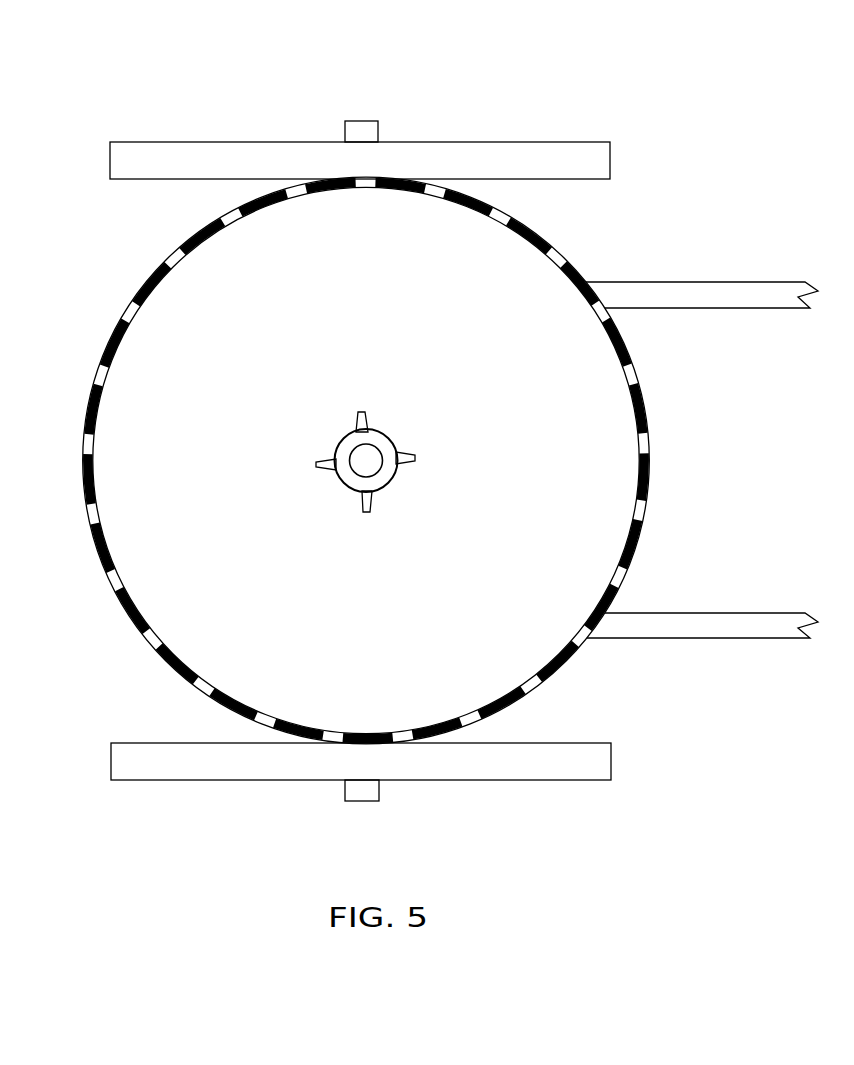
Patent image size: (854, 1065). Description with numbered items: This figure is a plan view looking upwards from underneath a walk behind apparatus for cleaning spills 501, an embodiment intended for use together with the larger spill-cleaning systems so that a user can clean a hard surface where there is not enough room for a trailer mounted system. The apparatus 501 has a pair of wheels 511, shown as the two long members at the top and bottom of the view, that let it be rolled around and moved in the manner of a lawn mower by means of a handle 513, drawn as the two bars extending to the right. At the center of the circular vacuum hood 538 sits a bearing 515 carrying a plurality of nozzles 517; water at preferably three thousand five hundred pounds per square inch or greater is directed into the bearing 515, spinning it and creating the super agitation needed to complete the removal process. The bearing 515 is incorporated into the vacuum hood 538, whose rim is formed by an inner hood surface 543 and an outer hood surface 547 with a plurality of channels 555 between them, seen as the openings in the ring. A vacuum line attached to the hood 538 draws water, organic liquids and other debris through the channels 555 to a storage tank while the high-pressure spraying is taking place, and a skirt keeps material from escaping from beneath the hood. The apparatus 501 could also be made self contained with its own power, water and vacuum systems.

The walk behind apparatus for cleaning spills 501 is at (130, 74).
The channels 555 is at (100, 322).
The outer hood surface 547 is at (631, 362).
The vacuum hood 538 is at (645, 418).
The inner hood surface 543 is at (623, 380).
The wheels 511 is at (110, 151).
The handle 513 is at (683, 282).
The bearing 515 is at (339, 446).
The nozzles 517 is at (361, 412).